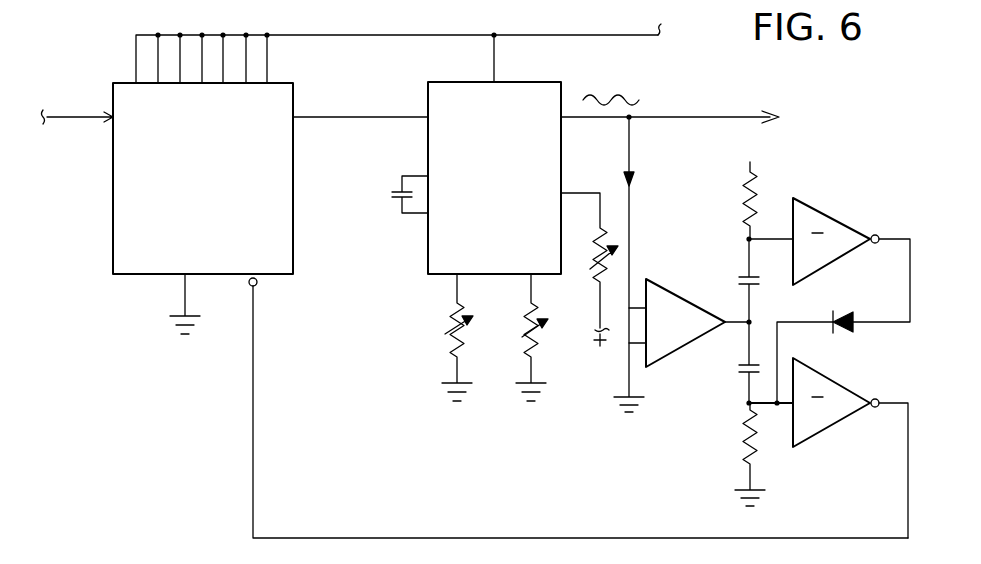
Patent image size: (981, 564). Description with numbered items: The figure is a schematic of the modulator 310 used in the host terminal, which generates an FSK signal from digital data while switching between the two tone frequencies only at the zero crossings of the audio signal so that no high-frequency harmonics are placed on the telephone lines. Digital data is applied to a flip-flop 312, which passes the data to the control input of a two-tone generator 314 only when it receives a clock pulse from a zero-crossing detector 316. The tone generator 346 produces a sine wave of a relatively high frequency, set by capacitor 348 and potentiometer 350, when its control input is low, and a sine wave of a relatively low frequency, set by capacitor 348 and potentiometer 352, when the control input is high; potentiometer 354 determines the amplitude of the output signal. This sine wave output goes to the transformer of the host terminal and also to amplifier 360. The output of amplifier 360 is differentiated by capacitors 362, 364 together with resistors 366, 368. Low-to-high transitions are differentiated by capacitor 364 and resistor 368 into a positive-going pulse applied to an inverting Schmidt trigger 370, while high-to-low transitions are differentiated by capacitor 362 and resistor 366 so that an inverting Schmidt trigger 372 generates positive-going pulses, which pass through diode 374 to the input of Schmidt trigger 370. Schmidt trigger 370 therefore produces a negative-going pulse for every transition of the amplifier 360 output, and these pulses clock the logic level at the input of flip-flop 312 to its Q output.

The modulator 310 is at (178, 438).
The flip-flop 312 is at (112, 240).
The two-tone generator 314 is at (416, 265).
The zero-crossing detector 316 is at (690, 410).
The tone generator 346 is at (566, 155).
The capacitor 348 is at (397, 200).
The potentiometer 350 is at (446, 328).
The potentiometer 352 is at (534, 333).
The potentiometer 354 is at (608, 222).
The amplifier 360 is at (688, 294).
The capacitor 362 is at (755, 290).
The capacitor 364 is at (747, 376).
The resistor 366 is at (755, 194).
The resistor 368 is at (757, 444).
The inverting Schmidt trigger 370 is at (858, 418).
The inverting Schmidt trigger 372 is at (841, 222).
The diode 374 is at (842, 328).